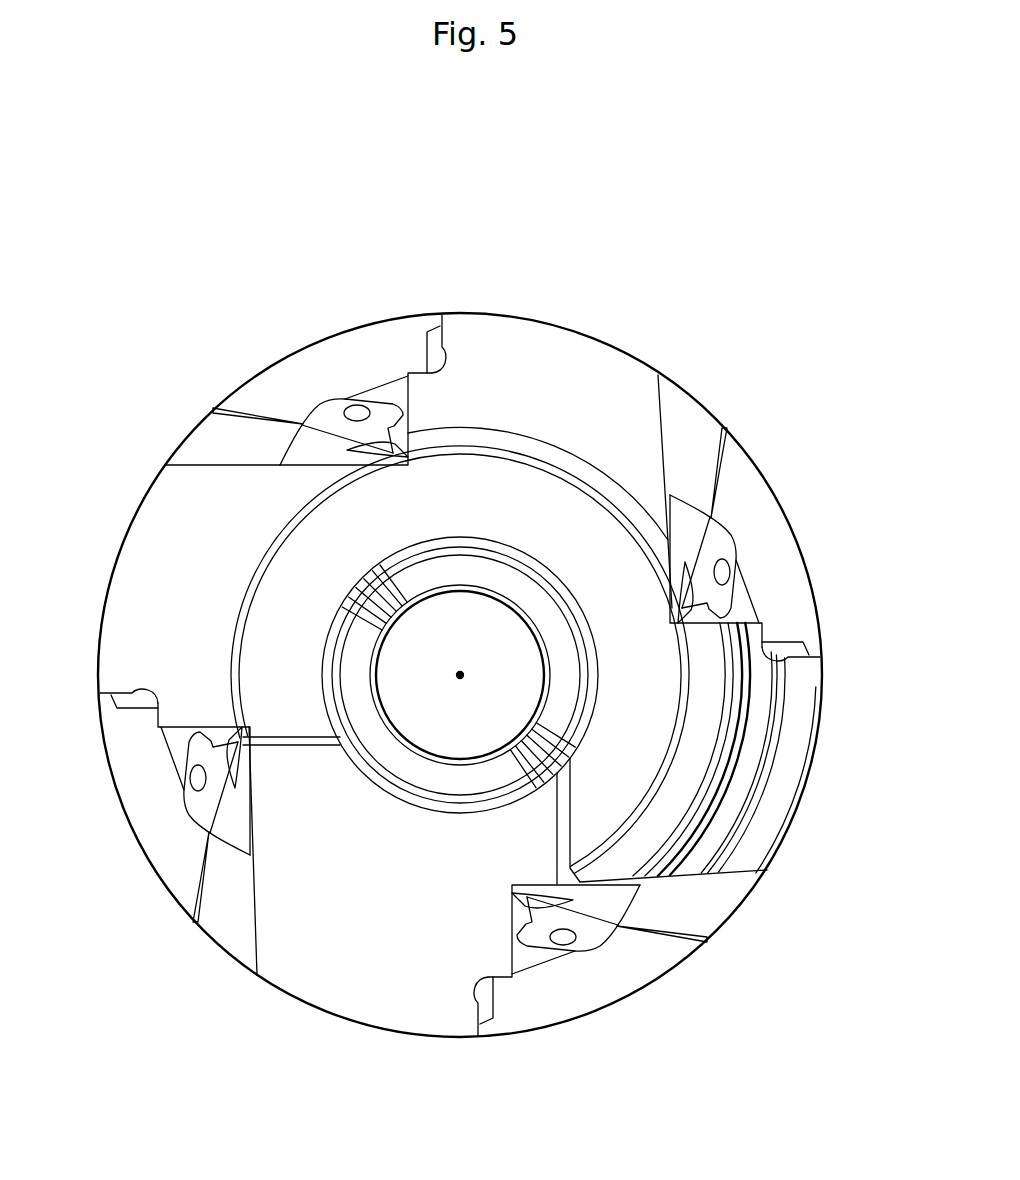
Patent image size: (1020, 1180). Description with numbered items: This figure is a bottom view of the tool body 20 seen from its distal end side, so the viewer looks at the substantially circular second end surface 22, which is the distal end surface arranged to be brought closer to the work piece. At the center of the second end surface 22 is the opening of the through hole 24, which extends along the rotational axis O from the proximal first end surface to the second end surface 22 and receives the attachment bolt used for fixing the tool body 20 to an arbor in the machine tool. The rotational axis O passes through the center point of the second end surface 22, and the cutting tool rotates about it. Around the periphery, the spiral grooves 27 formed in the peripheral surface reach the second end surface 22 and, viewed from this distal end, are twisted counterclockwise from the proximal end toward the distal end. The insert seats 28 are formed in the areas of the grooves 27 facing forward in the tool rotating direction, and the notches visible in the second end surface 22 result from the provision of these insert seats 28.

The tool body 20 is at (600, 246).
The second end surface 22 is at (176, 504).
The through hole 24 is at (427, 757).
The grooves 27 is at (748, 480).
The insert seats 28 is at (806, 650).
The rotational axis O is at (460, 675).